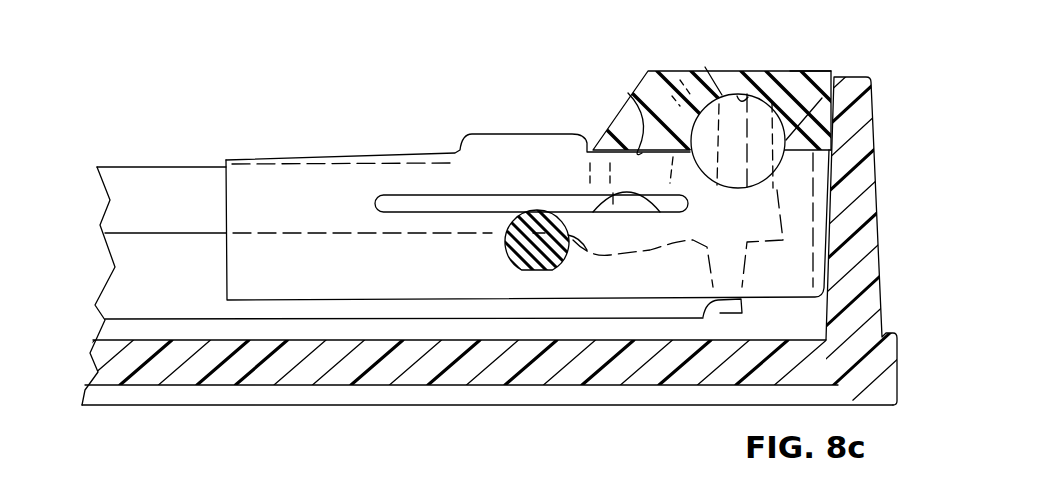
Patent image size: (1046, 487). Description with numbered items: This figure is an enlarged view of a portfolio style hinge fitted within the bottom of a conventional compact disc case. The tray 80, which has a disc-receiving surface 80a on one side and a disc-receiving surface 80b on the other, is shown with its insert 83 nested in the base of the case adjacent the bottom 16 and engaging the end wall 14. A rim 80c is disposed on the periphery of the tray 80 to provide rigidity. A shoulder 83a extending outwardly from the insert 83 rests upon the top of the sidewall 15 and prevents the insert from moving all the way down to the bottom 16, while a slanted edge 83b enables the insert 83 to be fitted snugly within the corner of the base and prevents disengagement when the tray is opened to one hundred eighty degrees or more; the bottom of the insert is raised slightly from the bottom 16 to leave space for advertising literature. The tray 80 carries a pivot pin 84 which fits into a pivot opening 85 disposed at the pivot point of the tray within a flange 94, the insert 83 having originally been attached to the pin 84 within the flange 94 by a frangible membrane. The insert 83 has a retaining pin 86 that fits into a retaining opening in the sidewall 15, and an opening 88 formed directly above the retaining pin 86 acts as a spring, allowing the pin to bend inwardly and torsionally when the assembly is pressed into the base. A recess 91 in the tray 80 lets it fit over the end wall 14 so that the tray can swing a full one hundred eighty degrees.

The end wall 14 is at (879, 272).
The sidewall 15 is at (108, 333).
The bottom 16 is at (590, 401).
The tray 80 is at (136, 200).
The disc-receiving surface 80a is at (171, 165).
The disc-receiving surface 80b is at (215, 240).
The rim 80c is at (175, 316).
The insert 83 is at (224, 190).
The shoulder 83a is at (628, 93).
The slanted edge 83b is at (803, 71).
The pivot pin 84 is at (705, 67).
The pivot opening 85 is at (747, 94).
The retaining pin 86 is at (515, 262).
The opening 88 is at (420, 211).
The recess 91 is at (596, 127).
The flange 94 is at (673, 67).